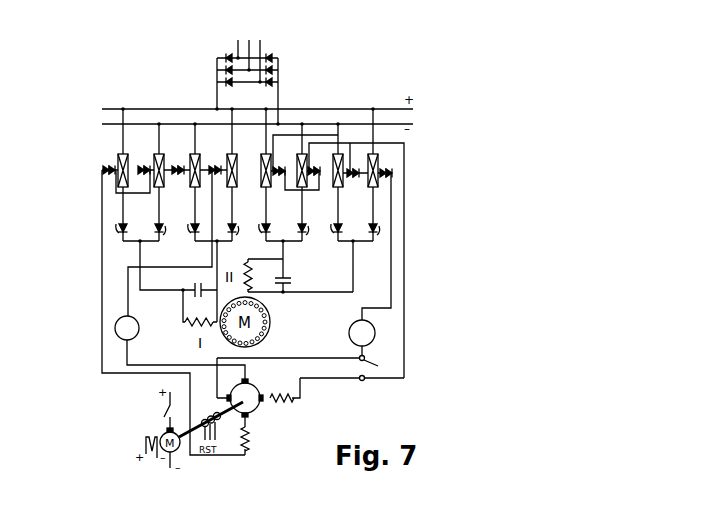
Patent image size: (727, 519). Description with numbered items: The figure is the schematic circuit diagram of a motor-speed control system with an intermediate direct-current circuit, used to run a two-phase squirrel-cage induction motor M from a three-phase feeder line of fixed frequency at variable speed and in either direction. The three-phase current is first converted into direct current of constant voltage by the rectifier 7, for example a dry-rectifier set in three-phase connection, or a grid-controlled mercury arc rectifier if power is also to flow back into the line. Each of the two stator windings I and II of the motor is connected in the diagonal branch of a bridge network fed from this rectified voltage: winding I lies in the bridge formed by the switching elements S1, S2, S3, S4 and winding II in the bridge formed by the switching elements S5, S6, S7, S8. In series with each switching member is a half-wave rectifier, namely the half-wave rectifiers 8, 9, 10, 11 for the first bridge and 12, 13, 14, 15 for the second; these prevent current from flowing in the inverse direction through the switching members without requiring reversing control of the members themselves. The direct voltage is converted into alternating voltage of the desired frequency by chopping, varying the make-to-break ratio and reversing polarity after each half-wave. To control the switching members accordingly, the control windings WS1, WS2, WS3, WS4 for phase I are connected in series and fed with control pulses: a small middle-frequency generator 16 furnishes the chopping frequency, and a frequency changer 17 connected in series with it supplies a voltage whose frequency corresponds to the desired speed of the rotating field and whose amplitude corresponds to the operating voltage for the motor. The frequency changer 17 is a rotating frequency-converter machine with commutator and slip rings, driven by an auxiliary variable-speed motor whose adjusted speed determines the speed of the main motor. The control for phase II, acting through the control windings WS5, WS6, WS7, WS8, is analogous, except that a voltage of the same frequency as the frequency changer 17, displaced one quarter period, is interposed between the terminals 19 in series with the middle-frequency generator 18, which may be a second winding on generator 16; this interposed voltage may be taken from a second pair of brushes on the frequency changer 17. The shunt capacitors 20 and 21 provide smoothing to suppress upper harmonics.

The rectifier 7 is at (298, 80).
The half-wave rectifier 8 is at (117, 237).
The half-wave rectifier 9 is at (163, 239).
The half-wave rectifier 10 is at (189, 239).
The half-wave rectifier 11 is at (238, 240).
The half-wave rectifier 12 is at (258, 240).
The half-wave rectifier 13 is at (309, 240).
The half-wave rectifier 14 is at (331, 240).
The half-wave rectifier 15 is at (381, 243).
The middle-frequency generator 16 is at (135, 320).
The frequency changer 17 is at (282, 420).
The auxiliary middle-frequency generator 18 is at (352, 334).
The terminals 19 is at (377, 363).
The shunt capacitor 20 is at (197, 283).
The shunt capacitor 21 is at (293, 278).
The switching element S1 is at (125, 186).
The switching element S2 is at (163, 185).
The switching element S3 is at (199, 185).
The switching element S4 is at (237, 185).
The switching element S5 is at (262, 162).
The switching element S6 is at (298, 167).
The switching element S7 is at (334, 173).
The switching element S8 is at (376, 186).
The control winding WS1 is at (109, 166).
The control winding WS2 is at (143, 166).
The control winding WS3 is at (178, 166).
The control winding WS4 is at (216, 166).
The control winding WS5 is at (279, 176).
The control winding WS6 is at (314, 176).
The control winding WS7 is at (354, 178).
The control winding WS8 is at (394, 173).